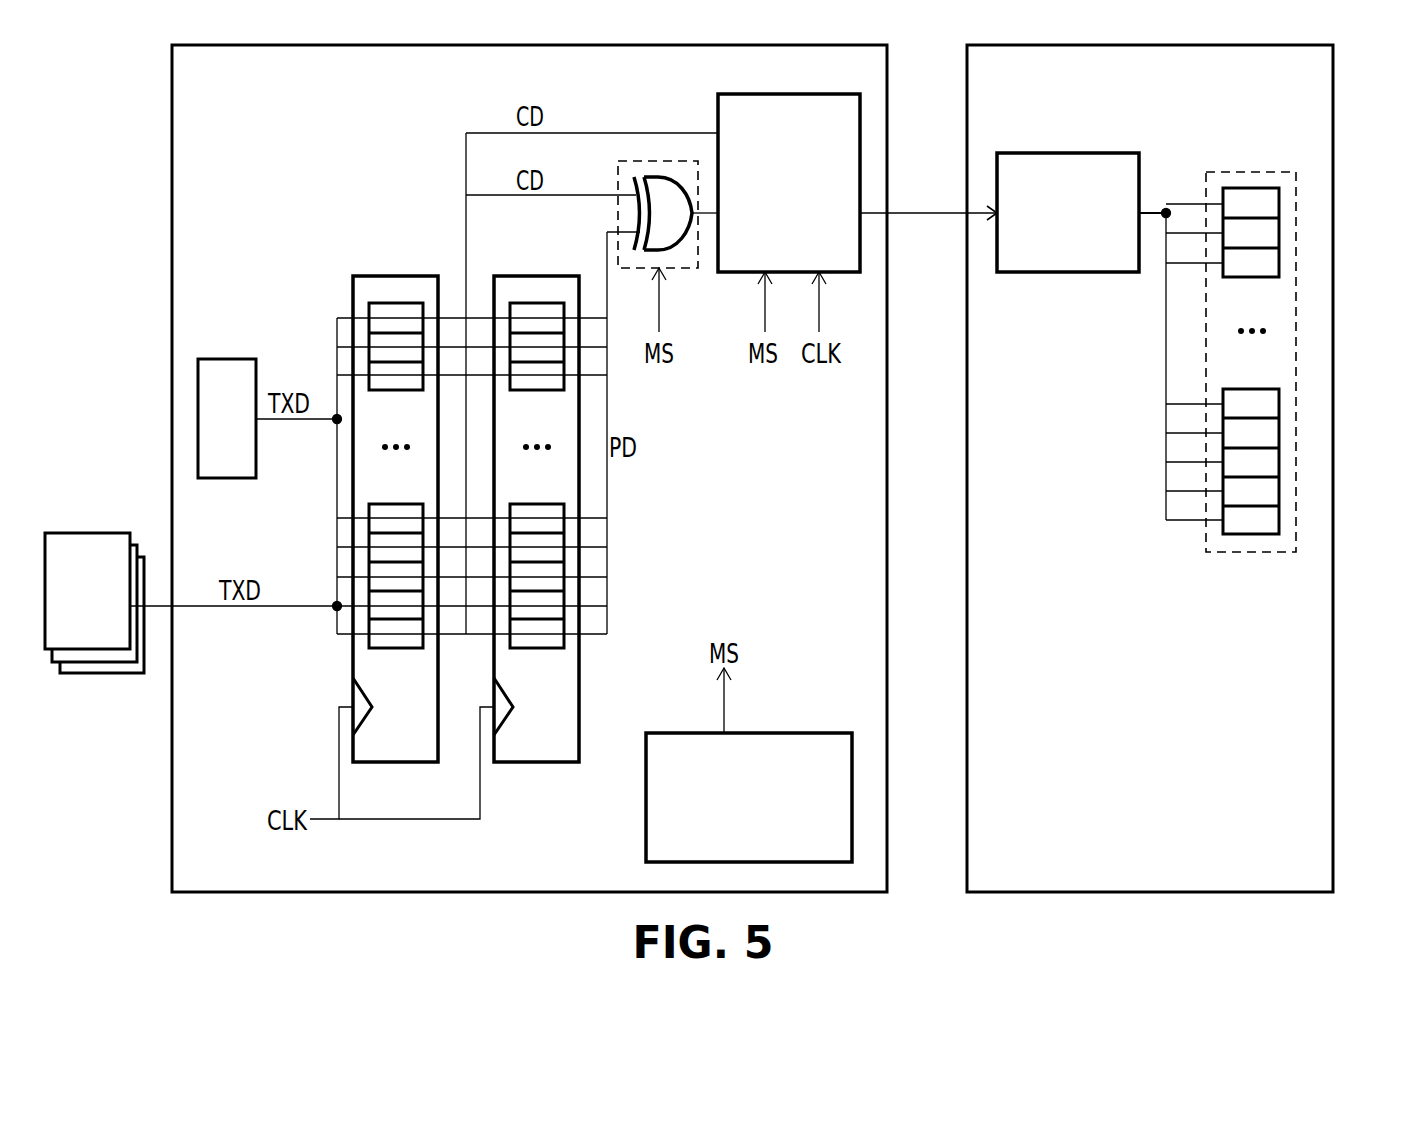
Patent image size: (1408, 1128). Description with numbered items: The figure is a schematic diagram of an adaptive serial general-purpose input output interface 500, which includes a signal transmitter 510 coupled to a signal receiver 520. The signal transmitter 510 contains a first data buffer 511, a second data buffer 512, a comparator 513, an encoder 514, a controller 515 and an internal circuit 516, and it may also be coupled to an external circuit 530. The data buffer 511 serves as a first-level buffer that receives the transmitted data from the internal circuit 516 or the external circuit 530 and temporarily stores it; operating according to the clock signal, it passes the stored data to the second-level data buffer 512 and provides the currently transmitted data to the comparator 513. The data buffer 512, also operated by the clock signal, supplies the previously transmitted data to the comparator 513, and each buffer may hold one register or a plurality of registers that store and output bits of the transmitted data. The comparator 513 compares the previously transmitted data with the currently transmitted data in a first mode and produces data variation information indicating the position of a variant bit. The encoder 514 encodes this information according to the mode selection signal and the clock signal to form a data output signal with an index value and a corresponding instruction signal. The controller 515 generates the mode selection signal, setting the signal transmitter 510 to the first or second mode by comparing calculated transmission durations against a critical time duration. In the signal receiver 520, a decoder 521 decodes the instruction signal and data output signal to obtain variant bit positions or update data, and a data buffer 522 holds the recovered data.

The adaptive serial general-purpose input output interface 500 is at (1363, 918).
The signal transmitter 510 is at (172, 130).
The data buffer 511 is at (396, 275).
The data buffer 512 is at (537, 275).
The comparator 513 is at (696, 268).
The encoder 514 is at (718, 108).
The controller 515 is at (646, 826).
The internal circuit 516 is at (228, 359).
The signal receiver 520 is at (1333, 130).
The decoder 521 is at (1068, 153).
The data buffer 522 is at (1253, 171).
The external circuit 530 is at (88, 532).